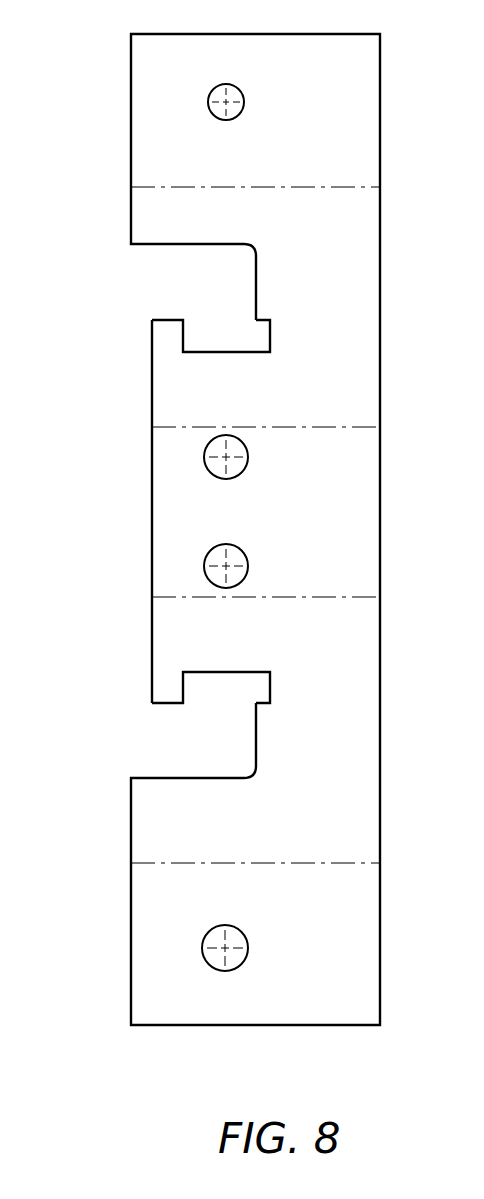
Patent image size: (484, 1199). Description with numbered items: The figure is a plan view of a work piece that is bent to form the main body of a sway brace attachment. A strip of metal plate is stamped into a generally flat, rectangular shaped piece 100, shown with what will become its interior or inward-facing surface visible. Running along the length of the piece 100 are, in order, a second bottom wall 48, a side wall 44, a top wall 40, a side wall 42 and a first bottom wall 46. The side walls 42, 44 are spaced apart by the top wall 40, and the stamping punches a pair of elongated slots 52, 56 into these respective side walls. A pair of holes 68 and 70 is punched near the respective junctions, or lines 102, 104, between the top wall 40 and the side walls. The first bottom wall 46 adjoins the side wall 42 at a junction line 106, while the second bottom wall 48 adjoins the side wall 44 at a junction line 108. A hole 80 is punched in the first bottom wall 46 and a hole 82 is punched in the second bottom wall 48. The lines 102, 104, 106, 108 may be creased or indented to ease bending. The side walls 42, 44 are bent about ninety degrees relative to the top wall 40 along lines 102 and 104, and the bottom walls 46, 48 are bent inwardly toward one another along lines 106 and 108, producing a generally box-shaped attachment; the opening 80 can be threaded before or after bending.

The top wall 40 is at (370, 510).
The side wall 42 is at (370, 724).
The side wall 44 is at (370, 290).
The first bottom wall 46 is at (145, 960).
The second bottom wall 48 is at (145, 108).
The elongated slot 52 is at (243, 730).
The elongated slot 56 is at (243, 281).
The hole 68 is at (242, 548).
The hole 70 is at (242, 474).
The hole 80 is at (242, 929).
The hole 82 is at (238, 114).
The piece 100 is at (138, 495).
The junction line 102 is at (152, 427).
The junction line 104 is at (152, 597).
The junction line 106 is at (131, 863).
The junction line 108 is at (131, 187).